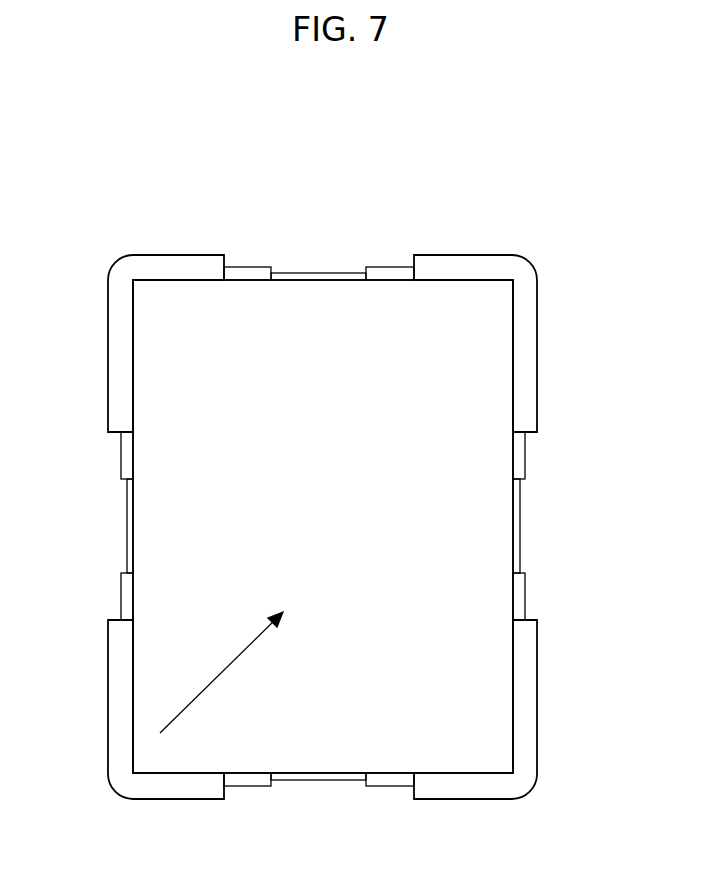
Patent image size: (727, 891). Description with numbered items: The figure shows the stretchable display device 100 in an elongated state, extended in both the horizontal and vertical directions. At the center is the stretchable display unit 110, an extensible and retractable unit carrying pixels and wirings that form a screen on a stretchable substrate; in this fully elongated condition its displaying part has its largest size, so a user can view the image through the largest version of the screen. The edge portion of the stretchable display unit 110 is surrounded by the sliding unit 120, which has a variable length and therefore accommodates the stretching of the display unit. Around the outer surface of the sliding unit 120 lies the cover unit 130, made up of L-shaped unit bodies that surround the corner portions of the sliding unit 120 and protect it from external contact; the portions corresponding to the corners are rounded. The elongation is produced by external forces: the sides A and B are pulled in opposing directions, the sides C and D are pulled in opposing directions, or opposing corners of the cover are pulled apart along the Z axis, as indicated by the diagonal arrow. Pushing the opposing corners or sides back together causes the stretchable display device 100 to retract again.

The stretchable display device 100 is at (331, 527).
The stretchable display unit 110 is at (325, 787).
The sliding unit 120 is at (527, 457).
The cover unit 130 is at (537, 287).
The side A is at (461, 254).
The side B is at (461, 800).
The side C is at (108, 356).
The side D is at (538, 355).
The Z axis Z is at (208, 682).